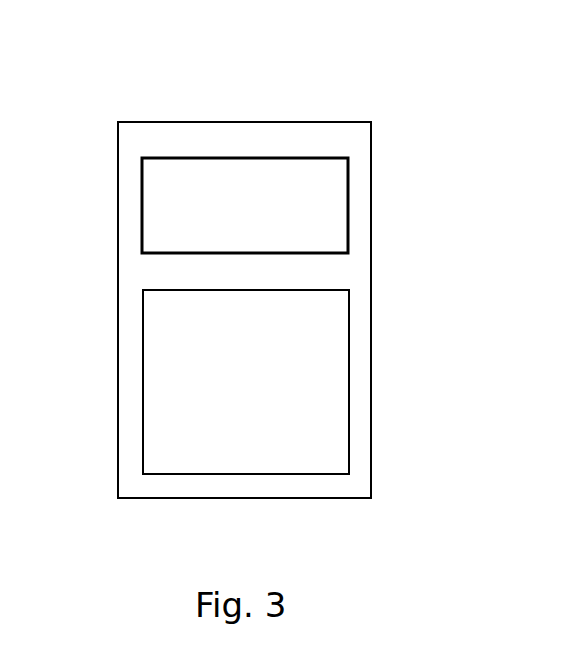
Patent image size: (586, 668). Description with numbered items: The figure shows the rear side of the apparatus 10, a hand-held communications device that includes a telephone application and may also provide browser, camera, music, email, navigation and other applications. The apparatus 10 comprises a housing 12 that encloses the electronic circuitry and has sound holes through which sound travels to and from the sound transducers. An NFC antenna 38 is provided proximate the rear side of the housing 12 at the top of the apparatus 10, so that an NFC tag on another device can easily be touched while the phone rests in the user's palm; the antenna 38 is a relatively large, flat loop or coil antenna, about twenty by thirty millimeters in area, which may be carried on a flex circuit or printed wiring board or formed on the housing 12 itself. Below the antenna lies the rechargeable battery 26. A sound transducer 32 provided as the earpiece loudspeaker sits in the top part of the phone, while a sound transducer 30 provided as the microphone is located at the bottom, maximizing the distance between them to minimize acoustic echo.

The apparatus 10 is at (433, 112).
The housing 12 is at (117, 282).
The rechargeable battery 26 is at (332, 405).
The sound transducer 30 is at (296, 500).
The sound transducer 32 is at (295, 122).
The NFC antenna 38 is at (350, 228).